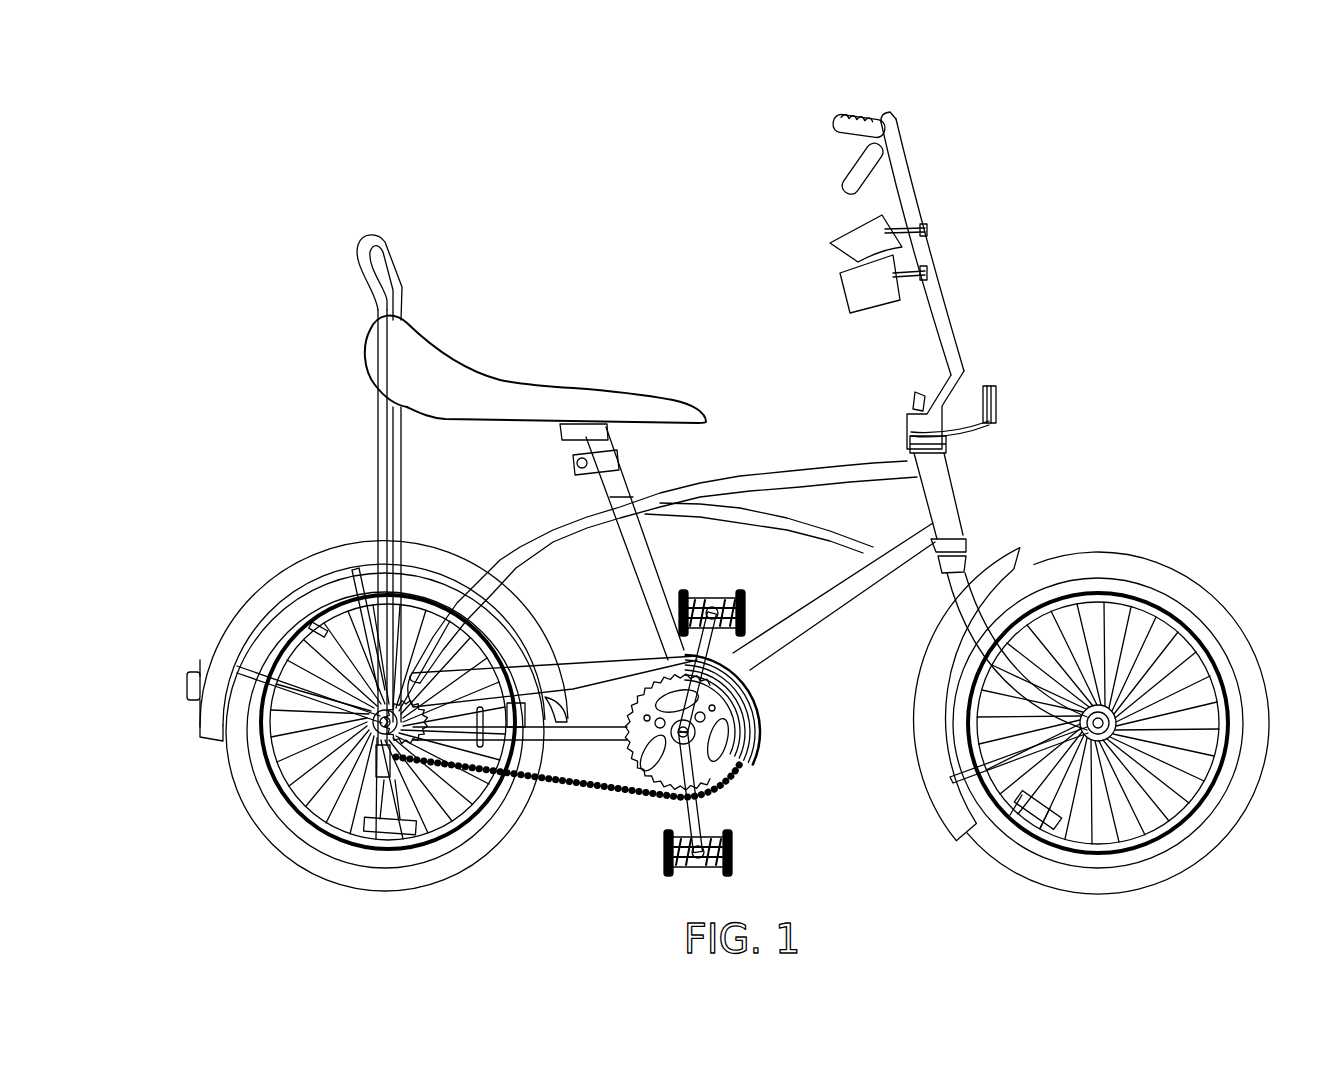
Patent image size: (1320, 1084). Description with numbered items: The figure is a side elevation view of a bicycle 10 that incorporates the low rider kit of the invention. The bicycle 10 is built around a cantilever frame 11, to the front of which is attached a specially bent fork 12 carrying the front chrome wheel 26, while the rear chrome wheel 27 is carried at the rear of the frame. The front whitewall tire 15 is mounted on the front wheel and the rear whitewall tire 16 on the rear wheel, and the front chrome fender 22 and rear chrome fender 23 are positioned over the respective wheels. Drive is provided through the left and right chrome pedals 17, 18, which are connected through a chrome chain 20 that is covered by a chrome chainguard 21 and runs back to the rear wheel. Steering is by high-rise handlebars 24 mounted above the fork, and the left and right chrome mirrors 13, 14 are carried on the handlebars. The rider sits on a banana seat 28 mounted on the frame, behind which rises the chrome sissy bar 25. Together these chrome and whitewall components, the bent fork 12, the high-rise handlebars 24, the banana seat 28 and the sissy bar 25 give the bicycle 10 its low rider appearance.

The bicycle 10 is at (527, 232).
The cantilever frame 11 is at (948, 512).
The specially bent fork 12 is at (971, 568).
The left chrome mirror 13 is at (873, 278).
The right chrome mirror 14 is at (858, 228).
The front whitewall tire 15 is at (1205, 605).
The rear whitewall tire 16 is at (281, 832).
The left chrome pedal 17 is at (716, 606).
The right chrome pedal 18 is at (700, 868).
The chrome chain 20 is at (572, 803).
The chrome chainguard 21 is at (760, 728).
The front chrome fender 22 is at (928, 683).
The rear chrome fender 23 is at (265, 590).
The high-rise handlebars 24 is at (918, 186).
The chrome sissy bar 25 is at (366, 238).
The front chrome wheel 26 is at (1018, 838).
The rear chrome wheel 27 is at (385, 848).
The banana seat 28 is at (513, 396).